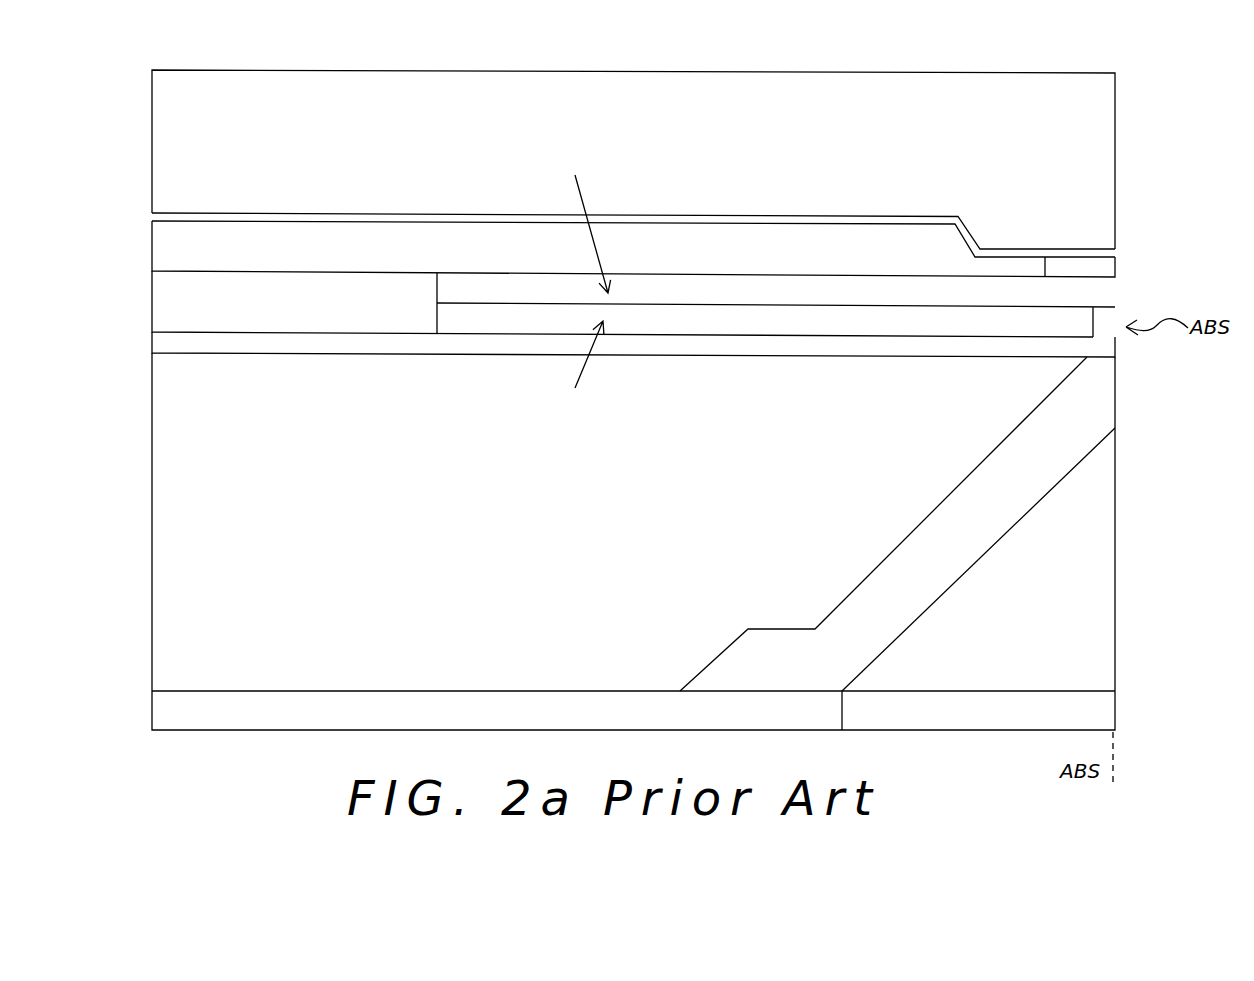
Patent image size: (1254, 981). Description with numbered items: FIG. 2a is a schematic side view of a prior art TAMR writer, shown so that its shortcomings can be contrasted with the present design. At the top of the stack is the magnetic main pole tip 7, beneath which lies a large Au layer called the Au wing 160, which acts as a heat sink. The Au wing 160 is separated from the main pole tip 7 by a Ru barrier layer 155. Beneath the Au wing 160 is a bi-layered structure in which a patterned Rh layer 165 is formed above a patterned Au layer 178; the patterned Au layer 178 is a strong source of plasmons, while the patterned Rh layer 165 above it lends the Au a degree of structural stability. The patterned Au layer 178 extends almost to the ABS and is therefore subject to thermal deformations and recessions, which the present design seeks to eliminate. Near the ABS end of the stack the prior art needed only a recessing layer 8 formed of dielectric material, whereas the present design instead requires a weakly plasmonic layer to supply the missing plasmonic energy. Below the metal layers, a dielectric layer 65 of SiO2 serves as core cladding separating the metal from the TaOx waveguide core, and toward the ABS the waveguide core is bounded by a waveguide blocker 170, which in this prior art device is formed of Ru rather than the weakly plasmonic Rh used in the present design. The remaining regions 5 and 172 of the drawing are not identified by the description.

The top cladding / dielectric layer 5 is at (1095, 115).
The main pole tip 7 is at (1095, 214).
The recessing layer 8 is at (1095, 267).
The Ru barrier layer 155 is at (365, 217).
The Au wing 160 is at (680, 248).
The patterned Rh layer 165 is at (753, 288).
The patterned Au layer 178 is at (813, 322).
The dielectric layer 65 is at (860, 348).
The tapered waveguide section 172 is at (1098, 397).
The waveguide blocker 170 is at (1098, 553).